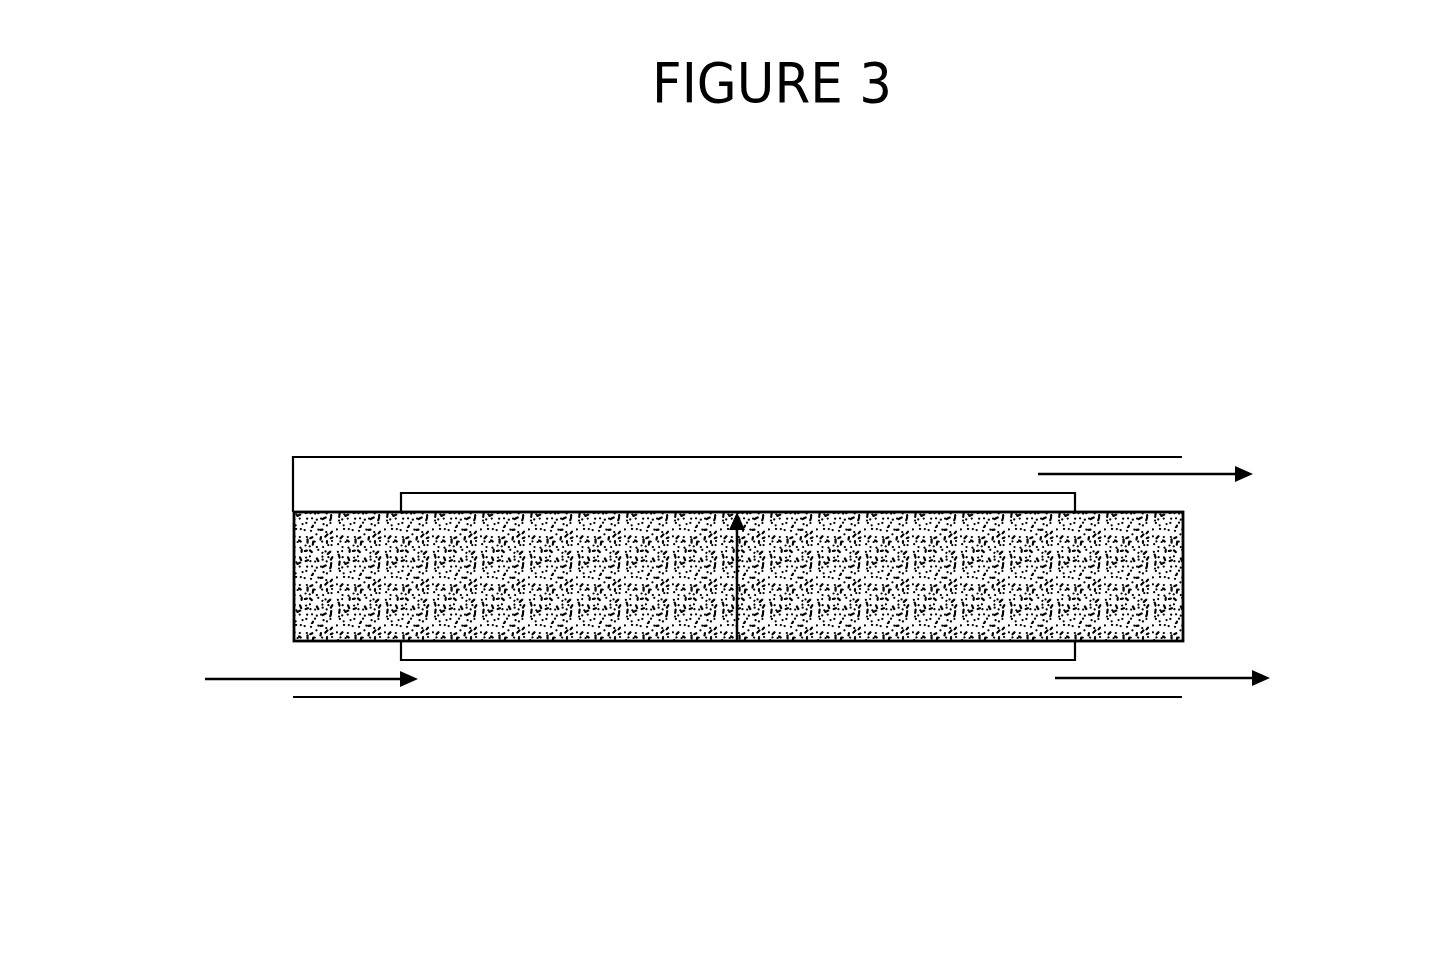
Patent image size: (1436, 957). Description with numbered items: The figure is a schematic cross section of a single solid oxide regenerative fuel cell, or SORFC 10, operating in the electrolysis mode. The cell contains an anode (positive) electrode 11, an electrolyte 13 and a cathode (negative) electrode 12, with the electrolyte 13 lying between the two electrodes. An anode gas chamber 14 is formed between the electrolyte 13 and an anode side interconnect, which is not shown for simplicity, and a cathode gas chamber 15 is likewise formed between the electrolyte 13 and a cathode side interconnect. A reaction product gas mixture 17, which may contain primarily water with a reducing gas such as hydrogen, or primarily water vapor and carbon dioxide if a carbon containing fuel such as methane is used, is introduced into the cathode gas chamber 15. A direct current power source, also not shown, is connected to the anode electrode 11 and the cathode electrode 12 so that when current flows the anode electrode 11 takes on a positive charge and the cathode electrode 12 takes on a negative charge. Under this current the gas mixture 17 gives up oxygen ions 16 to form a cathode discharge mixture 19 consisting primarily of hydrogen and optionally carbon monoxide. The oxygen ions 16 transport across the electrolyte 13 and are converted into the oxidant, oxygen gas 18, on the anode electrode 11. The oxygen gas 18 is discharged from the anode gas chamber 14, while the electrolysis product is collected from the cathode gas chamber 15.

The SORFC 10 is at (737, 382).
The anode electrode 11 is at (540, 495).
The cathode electrode 12 is at (772, 660).
The electrolyte 13 is at (935, 570).
The anode gas chamber 14 is at (737, 477).
The cathode gas chamber 15 is at (932, 677).
The oxygen ions 16 is at (737, 585).
The reaction product gas mixture 17 is at (255, 680).
The oxygen gas 18 is at (1202, 473).
The cathode discharge mixture 19 is at (1218, 678).